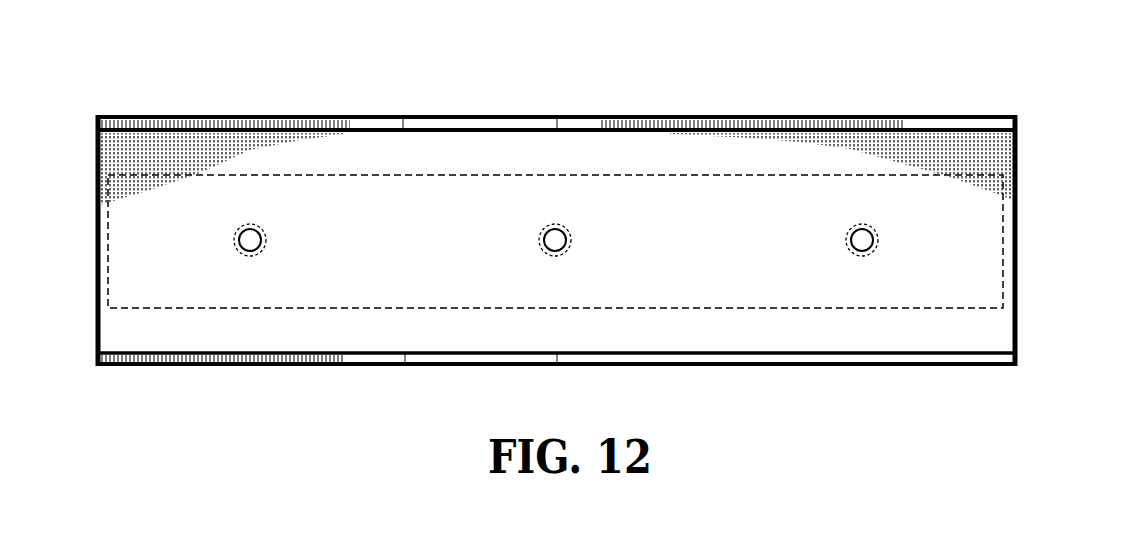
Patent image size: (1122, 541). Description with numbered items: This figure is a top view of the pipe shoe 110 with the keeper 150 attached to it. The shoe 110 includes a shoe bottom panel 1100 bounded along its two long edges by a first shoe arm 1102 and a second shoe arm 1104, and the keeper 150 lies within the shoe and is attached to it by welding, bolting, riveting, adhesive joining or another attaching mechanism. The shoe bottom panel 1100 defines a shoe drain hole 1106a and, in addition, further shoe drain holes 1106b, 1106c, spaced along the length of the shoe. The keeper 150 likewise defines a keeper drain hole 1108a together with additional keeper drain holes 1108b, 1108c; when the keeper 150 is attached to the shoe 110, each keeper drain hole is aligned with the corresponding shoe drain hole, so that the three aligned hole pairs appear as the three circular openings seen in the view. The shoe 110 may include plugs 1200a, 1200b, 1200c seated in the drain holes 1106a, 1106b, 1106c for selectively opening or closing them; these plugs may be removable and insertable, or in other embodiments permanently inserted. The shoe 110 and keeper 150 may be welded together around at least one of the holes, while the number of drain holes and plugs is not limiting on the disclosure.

The shoe 110 is at (823, 117).
The keeper 150 is at (1005, 266).
The shoe bottom panel 1100 is at (1005, 150).
The first shoe arm 1102 is at (948, 366).
The second shoe arm 1104 is at (980, 117).
The shoe drain hole 1106a is at (872, 225).
The shoe drain hole 1106b is at (568, 228).
The shoe drain hole 1106c is at (258, 226).
The keeper drain hole 1108a is at (858, 256).
The keeper drain hole 1108b is at (547, 229).
The keeper drain hole 1108c is at (268, 236).
The plug 1200a is at (853, 252).
The plug 1200b is at (553, 243).
The plug 1200c is at (253, 243).